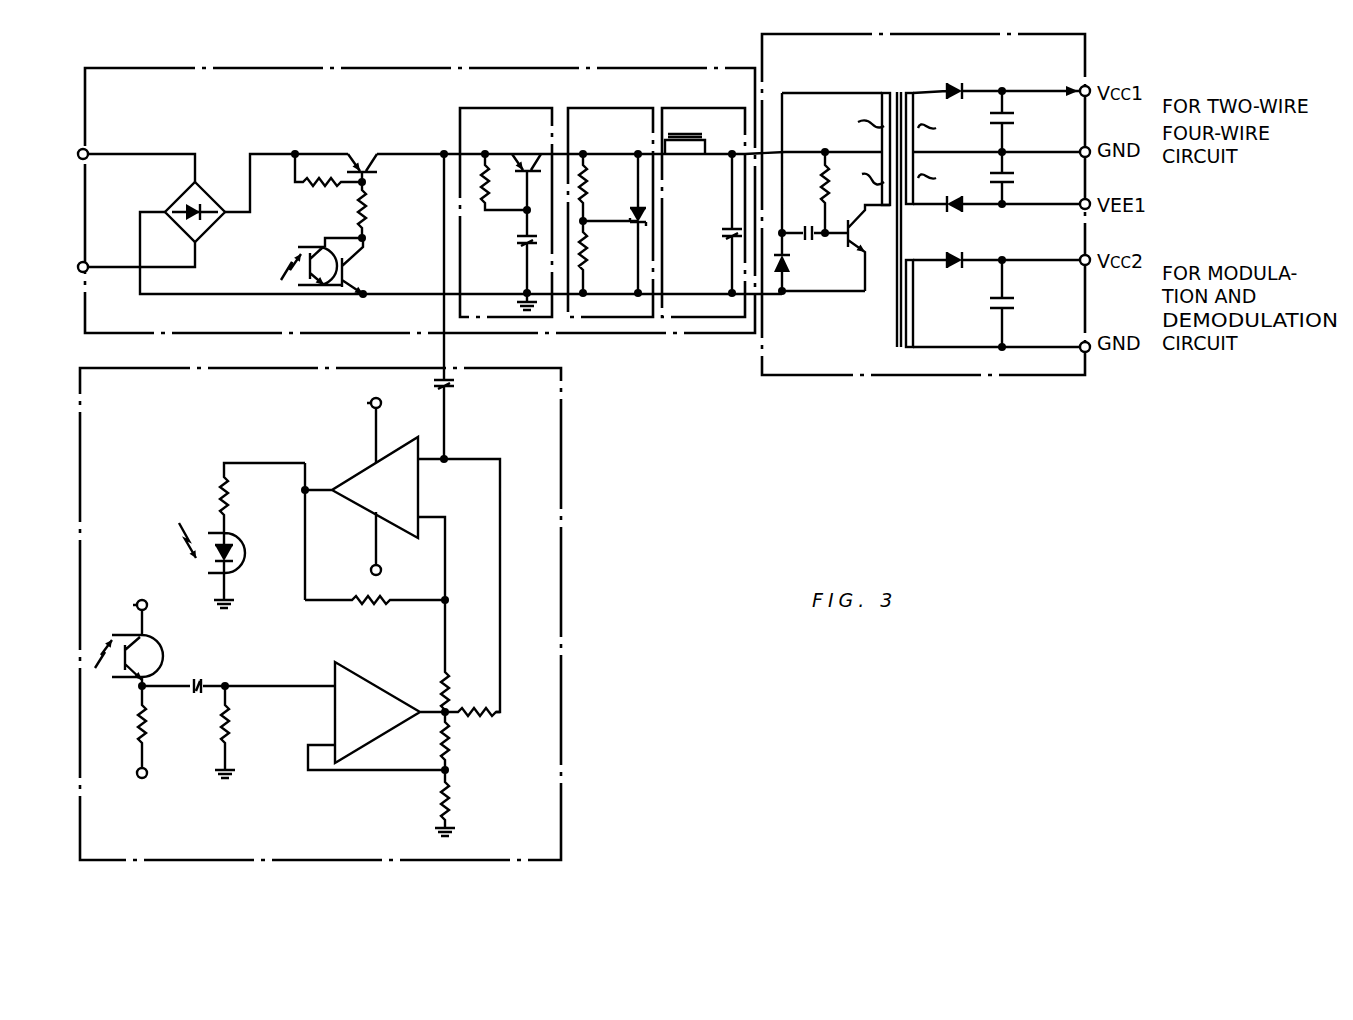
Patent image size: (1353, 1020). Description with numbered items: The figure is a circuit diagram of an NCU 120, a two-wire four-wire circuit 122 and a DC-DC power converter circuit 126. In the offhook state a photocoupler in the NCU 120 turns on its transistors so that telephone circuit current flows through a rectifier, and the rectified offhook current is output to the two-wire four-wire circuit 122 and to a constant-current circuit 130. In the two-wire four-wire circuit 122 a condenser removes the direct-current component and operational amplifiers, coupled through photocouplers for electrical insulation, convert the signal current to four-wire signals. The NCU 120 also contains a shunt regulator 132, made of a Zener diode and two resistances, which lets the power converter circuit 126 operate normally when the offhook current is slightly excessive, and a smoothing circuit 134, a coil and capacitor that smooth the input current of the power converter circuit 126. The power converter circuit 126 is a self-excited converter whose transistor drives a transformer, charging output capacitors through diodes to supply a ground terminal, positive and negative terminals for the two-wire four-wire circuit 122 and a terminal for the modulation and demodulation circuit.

The NCU 120 is at (460, 69).
The two-wire four-wire circuit 122 is at (562, 782).
The power converter circuit 126 is at (865, 376).
The constant-current circuit 130 is at (479, 105).
The shunt regulator 132 is at (584, 105).
The smoothing circuit 134 is at (726, 105).